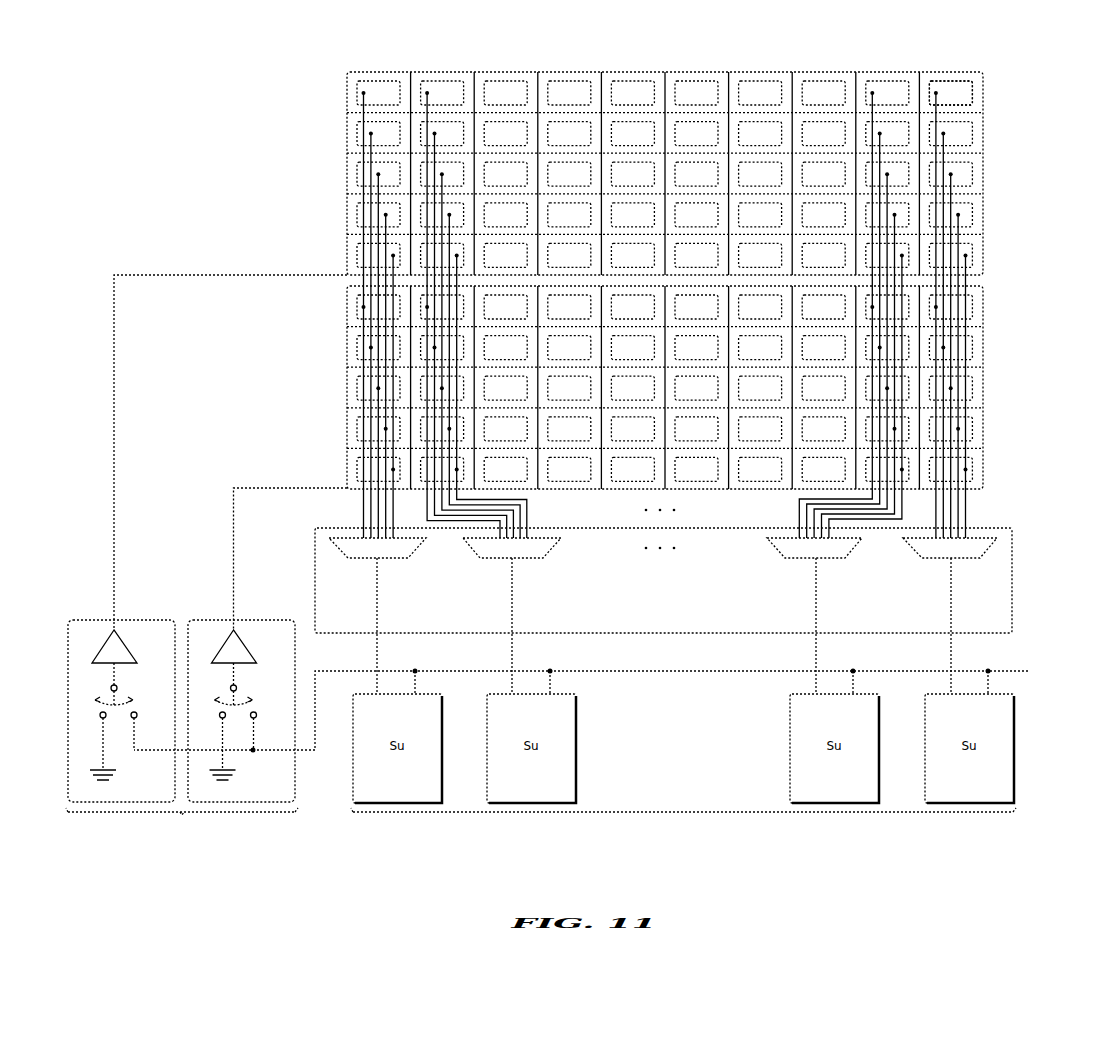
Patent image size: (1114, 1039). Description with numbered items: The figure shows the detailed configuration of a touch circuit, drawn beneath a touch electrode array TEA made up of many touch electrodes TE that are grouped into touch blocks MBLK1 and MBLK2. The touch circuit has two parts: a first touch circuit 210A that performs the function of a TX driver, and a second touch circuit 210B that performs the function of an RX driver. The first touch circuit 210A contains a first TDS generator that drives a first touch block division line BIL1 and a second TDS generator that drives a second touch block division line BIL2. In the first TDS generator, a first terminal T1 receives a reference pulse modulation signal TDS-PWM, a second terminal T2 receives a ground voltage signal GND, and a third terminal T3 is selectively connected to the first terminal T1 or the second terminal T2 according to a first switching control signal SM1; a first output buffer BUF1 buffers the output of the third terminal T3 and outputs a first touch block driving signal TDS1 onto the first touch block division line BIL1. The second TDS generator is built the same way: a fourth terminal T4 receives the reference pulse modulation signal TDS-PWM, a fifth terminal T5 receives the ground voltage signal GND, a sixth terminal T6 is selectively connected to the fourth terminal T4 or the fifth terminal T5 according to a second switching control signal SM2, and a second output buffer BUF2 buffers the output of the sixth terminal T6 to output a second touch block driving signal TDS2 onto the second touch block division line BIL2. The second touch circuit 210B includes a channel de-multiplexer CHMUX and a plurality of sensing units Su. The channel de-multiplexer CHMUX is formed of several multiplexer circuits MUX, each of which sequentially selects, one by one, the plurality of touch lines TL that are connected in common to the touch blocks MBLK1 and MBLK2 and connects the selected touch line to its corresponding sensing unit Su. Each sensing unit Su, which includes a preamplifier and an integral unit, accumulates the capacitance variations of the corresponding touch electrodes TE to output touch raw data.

The touch electrode array TEA is at (375, 48).
The touch electrodes TE is at (985, 85).
The touch block MBLK1 is at (346, 91).
The touch block MBLK2 is at (346, 306).
The touch lines TL is at (665, 314).
The multiplexer circuit MUX is at (663, 548).
The channel de-multiplexer CHMUX is at (1012, 581).
The reference pulse modulation signal TDS-PWM is at (612, 709).
The sensing unit Su is at (683, 748).
The first touch circuit 210A is at (182, 821).
The second touch circuit 210B is at (683, 821).
The first touch block division line BIL1 is at (113, 498).
The second touch block division line BIL2 is at (233, 498).
The first touch block driving signal TDS1 is at (121, 703).
The second touch block driving signal TDS2 is at (241, 703).
The first output buffer BUF1 is at (124, 646).
The second output buffer BUF2 is at (244, 646).
The first switching control signal SM1 is at (130, 700).
The second switching control signal SM2 is at (250, 700).
The first terminal T1 is at (138, 718).
The second terminal T2 is at (100, 718).
The third terminal T3 is at (118, 688).
The fourth terminal T4 is at (258, 718).
The fifth terminal T5 is at (220, 718).
The sixth terminal T6 is at (238, 688).
The ground voltage signal GND is at (101, 784).